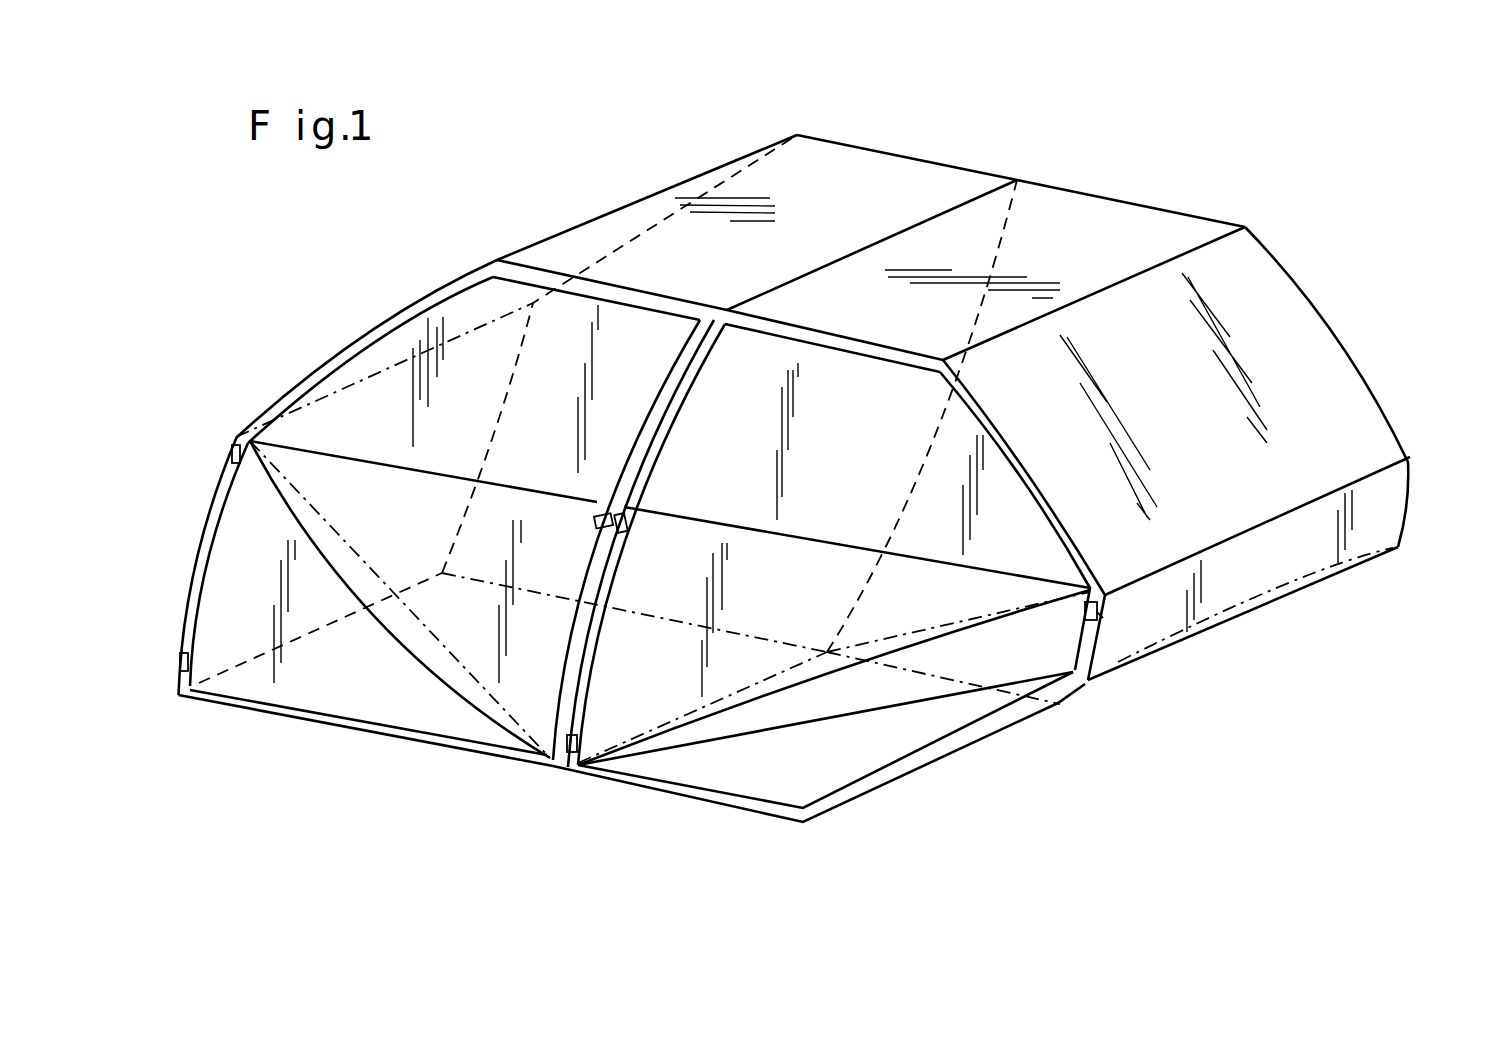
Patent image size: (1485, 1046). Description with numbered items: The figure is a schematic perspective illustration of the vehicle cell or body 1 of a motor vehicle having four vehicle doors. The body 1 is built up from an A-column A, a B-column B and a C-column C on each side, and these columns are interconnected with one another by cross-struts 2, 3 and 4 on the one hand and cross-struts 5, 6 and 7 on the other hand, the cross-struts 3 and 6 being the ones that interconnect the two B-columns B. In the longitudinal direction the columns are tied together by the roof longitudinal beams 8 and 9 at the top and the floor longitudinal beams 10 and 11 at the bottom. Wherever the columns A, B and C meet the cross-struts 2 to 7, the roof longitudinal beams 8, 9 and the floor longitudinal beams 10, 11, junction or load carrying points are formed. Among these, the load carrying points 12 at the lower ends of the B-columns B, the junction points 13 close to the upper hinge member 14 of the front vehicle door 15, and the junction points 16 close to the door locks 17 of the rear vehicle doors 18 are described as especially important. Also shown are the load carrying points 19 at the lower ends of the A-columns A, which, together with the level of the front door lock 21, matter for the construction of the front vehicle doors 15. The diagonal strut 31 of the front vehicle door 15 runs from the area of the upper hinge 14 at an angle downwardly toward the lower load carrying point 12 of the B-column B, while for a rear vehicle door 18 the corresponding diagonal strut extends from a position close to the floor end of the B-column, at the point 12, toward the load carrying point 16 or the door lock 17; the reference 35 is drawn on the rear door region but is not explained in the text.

The vehicle cell or body 1 is at (1180, 178).
The cross-strut 2 is at (271, 647).
The cross-strut 3 is at (712, 714).
The cross-strut 4 is at (1297, 593).
The cross-strut 5 is at (313, 403).
The cross-strut 6 is at (822, 265).
The cross-strut 7 is at (1302, 505).
The roof longitudinal beam 8 is at (608, 285).
The roof longitudinal beam 9 is at (897, 153).
The floor longitudinal beam 10 is at (503, 752).
The floor longitudinal beam 11 is at (665, 622).
The load carrying point 12 is at (577, 763).
The junction point 13 is at (236, 437).
The upper hinge member 14 is at (230, 456).
The front vehicle door 15 is at (305, 690).
The junction point 16 is at (1408, 462).
The door lock 17 is at (1103, 618).
The rear vehicle door 18 is at (789, 772).
The load carrying point 19 is at (178, 693).
The door lock 21 is at (597, 518).
The diagonal strut 31 is at (451, 693).
The tension cable 35 is at (832, 716).
The A-column A is at (197, 550).
The B-column B is at (653, 442).
The C-column C is at (1408, 503).